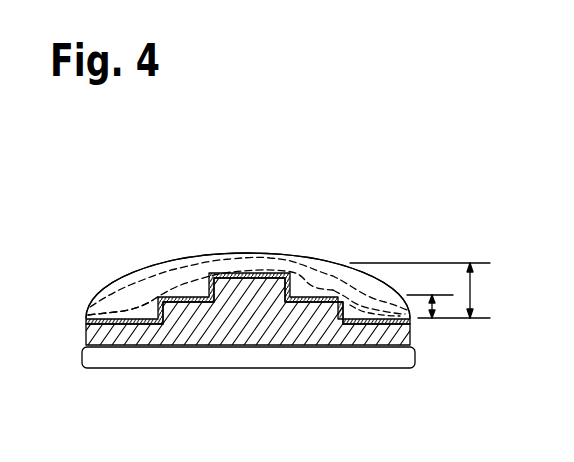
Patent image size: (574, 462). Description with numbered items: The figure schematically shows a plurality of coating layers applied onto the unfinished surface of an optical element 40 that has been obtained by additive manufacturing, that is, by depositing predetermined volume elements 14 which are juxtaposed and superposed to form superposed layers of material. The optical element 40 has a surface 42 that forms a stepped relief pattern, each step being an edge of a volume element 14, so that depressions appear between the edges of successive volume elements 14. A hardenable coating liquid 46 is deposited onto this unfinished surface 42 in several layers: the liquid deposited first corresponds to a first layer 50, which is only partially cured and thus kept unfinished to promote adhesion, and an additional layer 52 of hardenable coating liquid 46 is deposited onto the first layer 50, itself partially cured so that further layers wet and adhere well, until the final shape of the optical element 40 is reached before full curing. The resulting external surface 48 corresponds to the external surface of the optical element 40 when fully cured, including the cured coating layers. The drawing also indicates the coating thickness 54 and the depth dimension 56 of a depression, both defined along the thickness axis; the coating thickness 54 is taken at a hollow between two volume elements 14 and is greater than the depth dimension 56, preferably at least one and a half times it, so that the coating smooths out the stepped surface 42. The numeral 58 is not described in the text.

The predetermined volume element 14 is at (125, 338).
The optical element 40 is at (325, 243).
The surface 42 is at (255, 275).
The hardenable coating liquid 46 is at (192, 262).
The external surface 48 is at (228, 254).
The first layer 50 is at (152, 308).
The additional layer 52 is at (112, 308).
The coating thickness 54 is at (466, 282).
The depth dimension 56 is at (434, 306).
The lower region of sealing member 58 is at (345, 290).